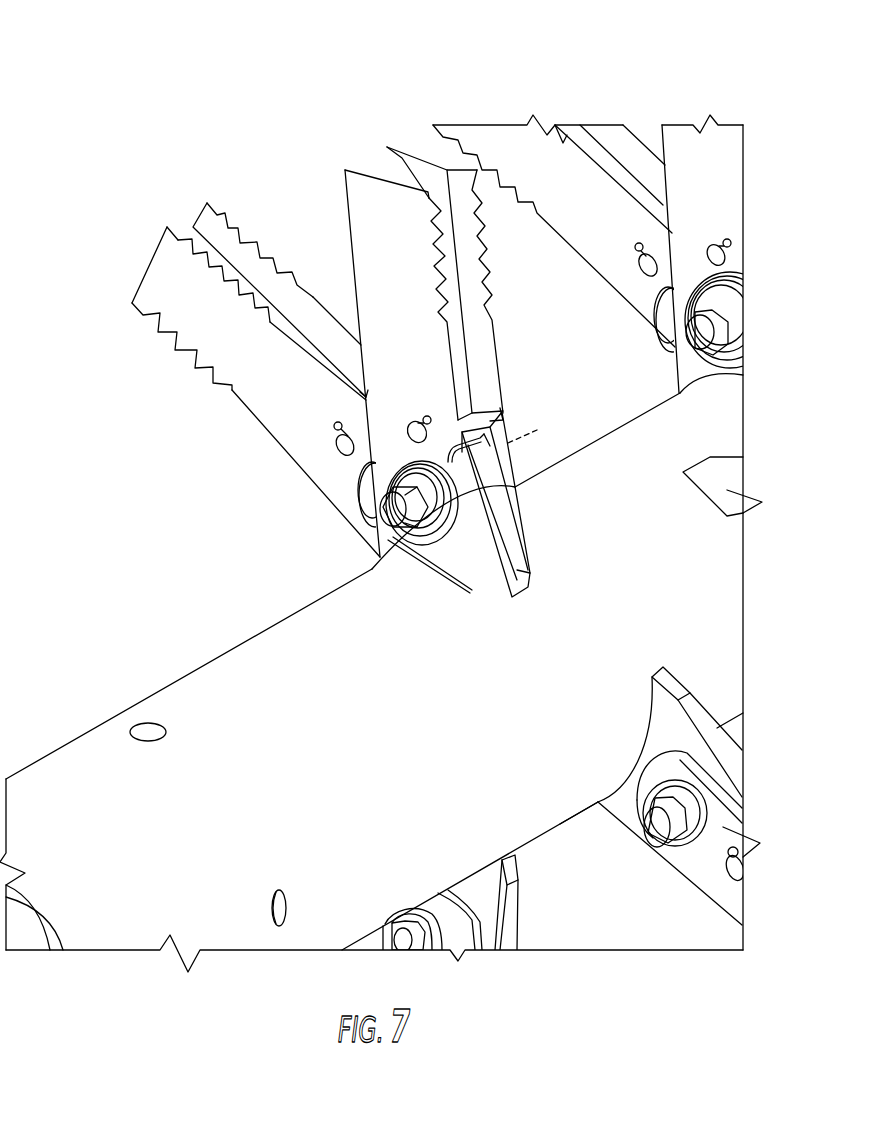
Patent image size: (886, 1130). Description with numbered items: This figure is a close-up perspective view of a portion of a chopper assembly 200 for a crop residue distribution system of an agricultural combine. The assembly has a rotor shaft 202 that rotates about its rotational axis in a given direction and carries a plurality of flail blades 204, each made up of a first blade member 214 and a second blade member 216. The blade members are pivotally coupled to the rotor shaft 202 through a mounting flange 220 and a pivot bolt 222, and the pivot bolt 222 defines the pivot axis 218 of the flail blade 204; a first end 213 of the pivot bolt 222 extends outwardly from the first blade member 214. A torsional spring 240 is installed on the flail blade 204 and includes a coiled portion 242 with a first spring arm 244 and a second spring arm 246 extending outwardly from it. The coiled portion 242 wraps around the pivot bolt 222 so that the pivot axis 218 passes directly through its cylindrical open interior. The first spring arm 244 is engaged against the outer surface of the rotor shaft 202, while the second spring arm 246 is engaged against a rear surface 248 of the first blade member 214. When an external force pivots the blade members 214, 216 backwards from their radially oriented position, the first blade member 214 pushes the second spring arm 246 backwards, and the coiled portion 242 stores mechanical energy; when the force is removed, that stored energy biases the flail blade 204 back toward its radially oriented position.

The chopper assembly 200 is at (374, 483).
The rotor shaft 202 is at (120, 935).
The flail blade 204 is at (192, 372).
The first end of the pivot bolt 213 is at (396, 538).
The first blade member 214 is at (150, 297).
The second blade member 216 is at (207, 222).
The pivot axis 218 is at (395, 515).
The mounting flange 220 is at (517, 543).
The pivot bolt 222 is at (393, 505).
The torsional spring 240 is at (470, 515).
The coiled portion 242 is at (385, 493).
The first spring arm 244 is at (470, 590).
The second spring arm 246 is at (490, 448).
The rear surface 248 is at (450, 343).